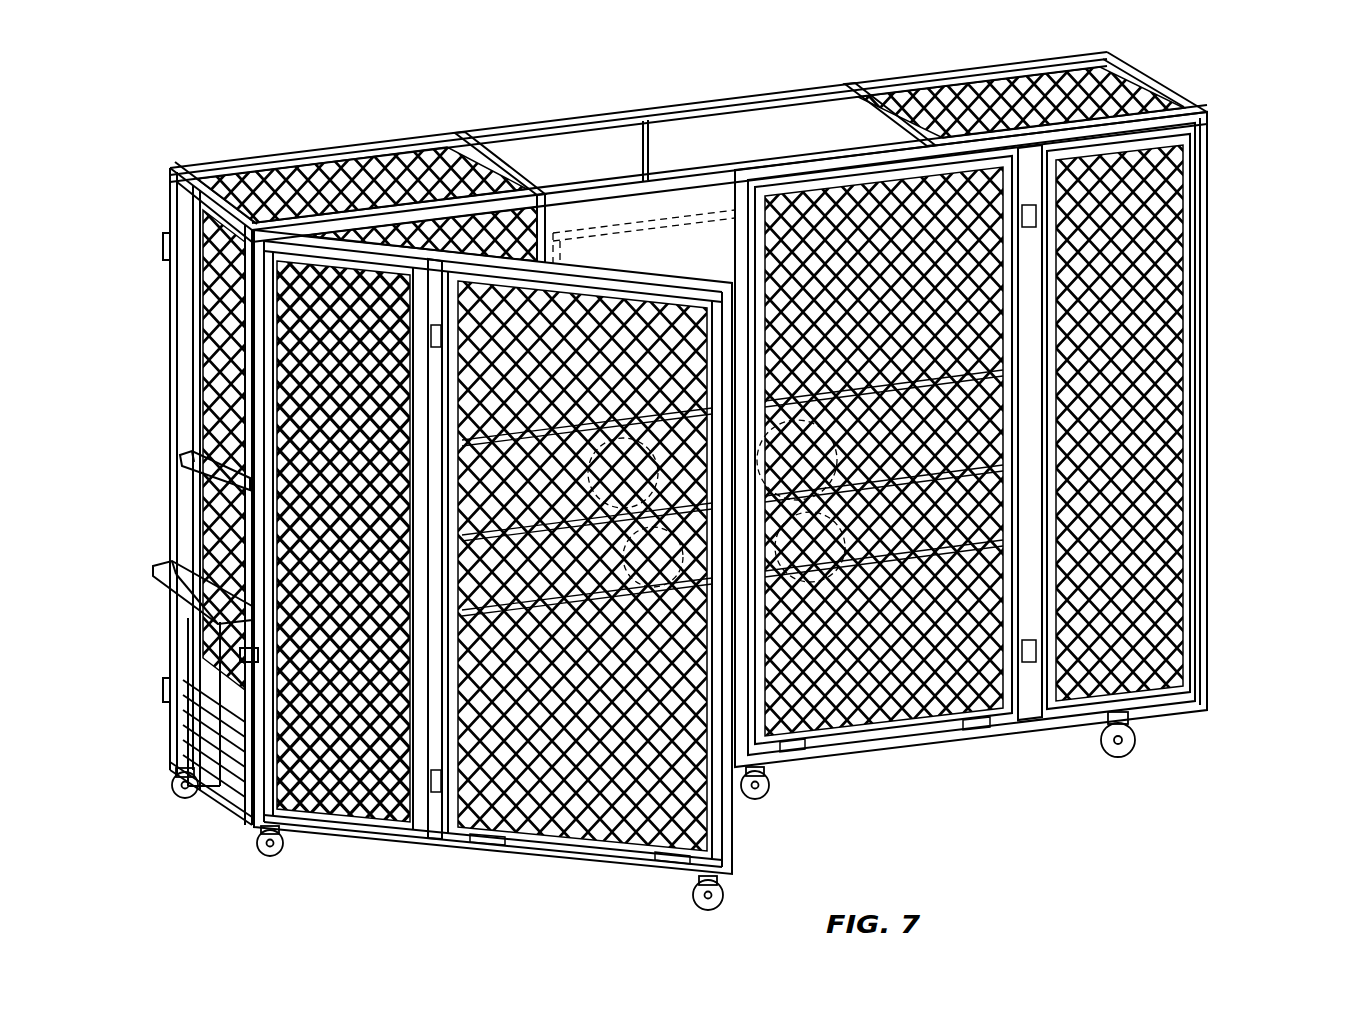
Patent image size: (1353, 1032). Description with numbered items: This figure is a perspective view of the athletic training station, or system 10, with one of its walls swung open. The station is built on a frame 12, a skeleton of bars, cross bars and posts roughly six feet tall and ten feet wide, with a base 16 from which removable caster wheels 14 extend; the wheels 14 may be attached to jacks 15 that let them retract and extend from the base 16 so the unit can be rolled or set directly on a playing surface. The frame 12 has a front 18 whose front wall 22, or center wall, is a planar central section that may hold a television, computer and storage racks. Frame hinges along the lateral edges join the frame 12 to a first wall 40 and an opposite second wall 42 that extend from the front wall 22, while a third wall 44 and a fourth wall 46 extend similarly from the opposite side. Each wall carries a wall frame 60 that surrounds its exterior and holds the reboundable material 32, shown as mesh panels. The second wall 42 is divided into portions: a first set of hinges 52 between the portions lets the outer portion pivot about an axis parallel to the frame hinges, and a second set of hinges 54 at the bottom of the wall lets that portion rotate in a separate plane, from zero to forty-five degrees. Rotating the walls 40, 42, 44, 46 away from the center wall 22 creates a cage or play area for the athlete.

The system 10 is at (1250, 515).
The frame 12 is at (1160, 90).
The wheels 14 is at (1125, 748).
The jacks 15 is at (195, 712).
The base 16 is at (233, 805).
The front 18 is at (906, 818).
The front wall 22 is at (580, 212).
The reboundable material 32 is at (1057, 95).
The first wall 40 is at (980, 735).
The second wall 42 is at (462, 848).
The third wall 44 is at (928, 74).
The fourth wall 46 is at (337, 142).
The first set of hinges 52 is at (1030, 725).
The second set of hinges 54 is at (795, 748).
The wall frame 60 is at (1198, 664).